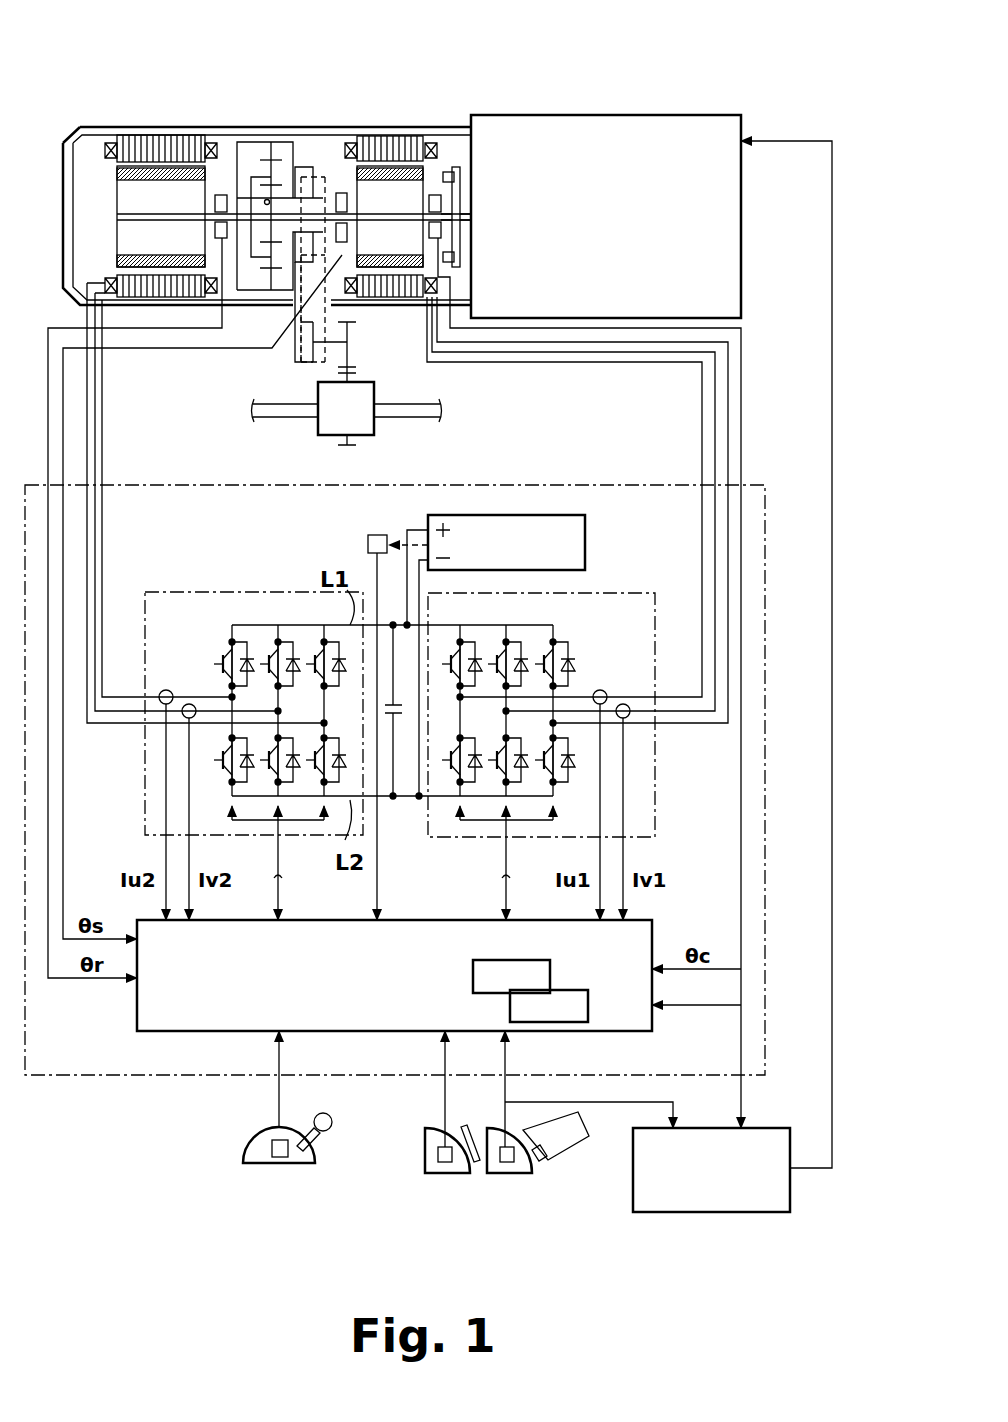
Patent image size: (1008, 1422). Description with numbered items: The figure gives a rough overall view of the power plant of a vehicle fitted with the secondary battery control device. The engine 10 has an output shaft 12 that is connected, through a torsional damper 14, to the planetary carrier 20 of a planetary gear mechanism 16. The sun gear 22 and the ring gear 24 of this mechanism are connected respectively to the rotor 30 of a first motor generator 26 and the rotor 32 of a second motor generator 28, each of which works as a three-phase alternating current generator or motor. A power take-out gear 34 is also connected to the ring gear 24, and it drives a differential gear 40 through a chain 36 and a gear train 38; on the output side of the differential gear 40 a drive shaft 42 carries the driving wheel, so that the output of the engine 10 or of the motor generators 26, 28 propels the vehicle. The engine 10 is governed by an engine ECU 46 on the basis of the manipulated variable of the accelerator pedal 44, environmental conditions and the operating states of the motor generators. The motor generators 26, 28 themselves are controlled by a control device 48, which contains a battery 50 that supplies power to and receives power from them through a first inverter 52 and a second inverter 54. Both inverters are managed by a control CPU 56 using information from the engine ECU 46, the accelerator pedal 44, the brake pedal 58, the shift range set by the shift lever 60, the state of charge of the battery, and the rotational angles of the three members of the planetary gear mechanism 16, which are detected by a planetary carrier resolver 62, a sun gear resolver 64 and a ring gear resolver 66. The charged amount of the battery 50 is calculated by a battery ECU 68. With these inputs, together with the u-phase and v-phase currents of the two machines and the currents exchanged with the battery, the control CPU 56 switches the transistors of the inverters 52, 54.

The engine 10 is at (596, 114).
The output shaft 12 is at (466, 212).
The torsional damper 14 is at (455, 168).
The planetary gear mechanism 16 is at (237, 150).
The planetary carrier 20 is at (250, 190).
The sun gear 22 is at (320, 198).
The ring gear 24 is at (273, 176).
The first motor generator 26 is at (400, 117).
The second motor generator 28 is at (153, 118).
The rotor 30 is at (458, 216).
The rotor 32 is at (122, 188).
The power take-out gear 34 is at (312, 178).
The chain 36 is at (300, 322).
The gear train 38 is at (350, 330).
The differential gear 40 is at (365, 440).
The drive shaft 42 is at (398, 411).
The accelerator pedal 44 is at (545, 1160).
The engine ECU 46 is at (790, 1200).
The control device 48 is at (545, 484).
The battery 50 is at (586, 545).
The first inverter 52 is at (655, 618).
The second inverter 54 is at (175, 592).
The control CPU 56 is at (384, 1032).
The brake pedal 58 is at (478, 1160).
The shift lever 60 is at (313, 1150).
The planetary carrier resolver 62 is at (434, 195).
The sun gear resolver 64 is at (340, 192).
The ring gear resolver 66 is at (221, 195).
The battery ECU 68 is at (367, 550).